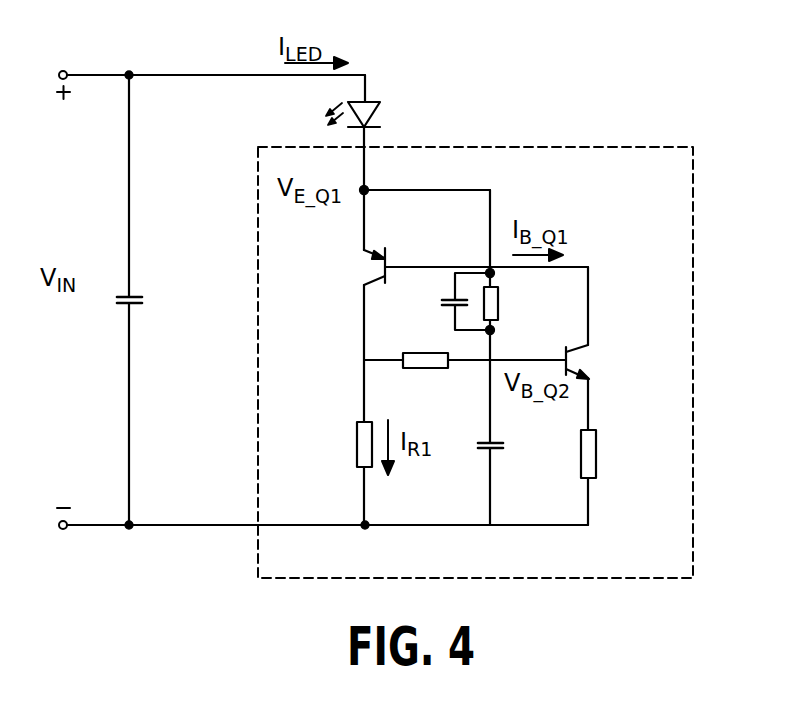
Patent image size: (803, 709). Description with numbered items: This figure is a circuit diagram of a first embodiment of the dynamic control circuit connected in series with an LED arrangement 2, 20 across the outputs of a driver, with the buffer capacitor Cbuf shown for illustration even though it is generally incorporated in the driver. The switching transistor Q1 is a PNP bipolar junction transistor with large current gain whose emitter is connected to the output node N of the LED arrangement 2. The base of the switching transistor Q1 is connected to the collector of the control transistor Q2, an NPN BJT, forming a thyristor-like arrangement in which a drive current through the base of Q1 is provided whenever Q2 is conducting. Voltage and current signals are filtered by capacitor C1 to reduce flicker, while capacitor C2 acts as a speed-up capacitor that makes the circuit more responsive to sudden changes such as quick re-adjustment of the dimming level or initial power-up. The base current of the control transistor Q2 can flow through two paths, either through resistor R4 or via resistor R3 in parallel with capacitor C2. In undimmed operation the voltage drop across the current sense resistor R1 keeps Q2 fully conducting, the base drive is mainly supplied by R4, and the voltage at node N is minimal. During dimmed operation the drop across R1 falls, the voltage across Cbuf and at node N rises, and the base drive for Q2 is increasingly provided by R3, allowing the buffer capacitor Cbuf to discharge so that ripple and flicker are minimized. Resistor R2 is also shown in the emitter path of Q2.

The LED arrangement 2 is at (407, 129).
The LED load 20 is at (370, 98).
The output node N is at (369, 186).
The switching transistor Q1 is at (375, 256).
The control transistor Q2 is at (584, 358).
The current sense resistor R1 is at (358, 441).
The second resistor R2 is at (597, 454).
The resistor R3 is at (500, 304).
The resistor R4 is at (418, 356).
The capacitor C1 is at (504, 445).
The speed-up capacitor C2 is at (440, 301).
The buffer capacitor Cbuf is at (143, 300).